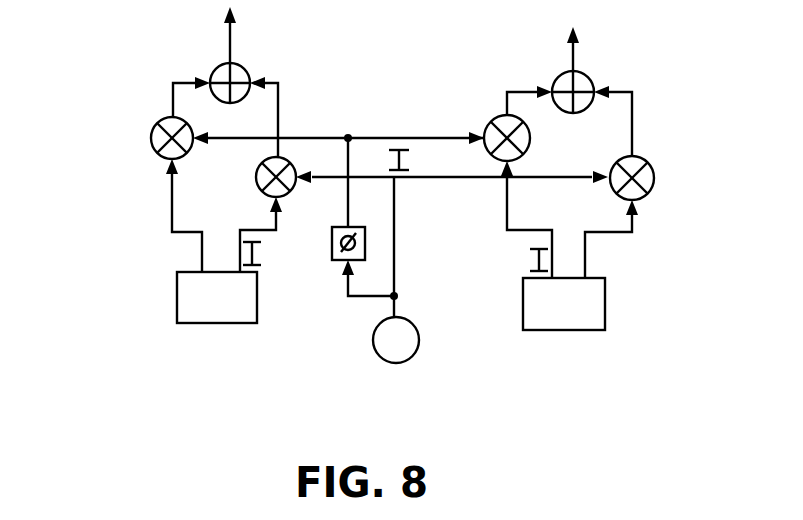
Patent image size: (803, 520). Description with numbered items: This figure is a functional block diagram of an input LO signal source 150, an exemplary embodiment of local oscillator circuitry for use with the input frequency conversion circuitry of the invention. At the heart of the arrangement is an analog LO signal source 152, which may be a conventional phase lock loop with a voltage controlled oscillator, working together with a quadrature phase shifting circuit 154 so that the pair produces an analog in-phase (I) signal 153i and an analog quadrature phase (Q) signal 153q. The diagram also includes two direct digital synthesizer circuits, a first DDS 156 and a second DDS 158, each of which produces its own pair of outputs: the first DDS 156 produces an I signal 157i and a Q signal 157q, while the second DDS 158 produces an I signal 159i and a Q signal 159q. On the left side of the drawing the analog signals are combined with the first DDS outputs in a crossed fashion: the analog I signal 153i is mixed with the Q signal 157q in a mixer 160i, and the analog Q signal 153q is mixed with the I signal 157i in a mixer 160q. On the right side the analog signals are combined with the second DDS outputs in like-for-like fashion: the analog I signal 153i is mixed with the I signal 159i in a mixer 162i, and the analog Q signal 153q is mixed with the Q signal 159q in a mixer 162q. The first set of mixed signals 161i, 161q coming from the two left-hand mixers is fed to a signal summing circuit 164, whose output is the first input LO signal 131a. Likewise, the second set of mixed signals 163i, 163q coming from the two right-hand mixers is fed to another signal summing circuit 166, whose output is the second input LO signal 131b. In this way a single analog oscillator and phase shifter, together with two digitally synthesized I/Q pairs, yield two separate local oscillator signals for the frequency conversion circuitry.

The input LO signal source 150 is at (114, 410).
The analog LO signal source 152 is at (393, 363).
The in-phase (I) signal 153i is at (400, 268).
The quadrature phase (Q) signal 153q is at (347, 196).
The quadrature phase shifting circuit 154 is at (331, 250).
The first direct digital synthesizer (DDS) circuit 156 is at (217, 323).
The I signal of first DDS 157i is at (260, 232).
The Q signal of first DDS 157q is at (172, 220).
The second direct digital synthesizer (DDS) circuit 158 is at (567, 330).
The I signal of second DDS 159i is at (502, 222).
The Q signal of second DDS 159q is at (633, 233).
The mixer 160i is at (256, 174).
The mixer 160q is at (151, 142).
The first mixed signal (I) 161i is at (281, 110).
The first mixed signal (Q) 161q is at (173, 100).
The mixer 162i is at (530, 145).
The mixer 162q is at (651, 164).
The second mixed signal (I) 163i is at (507, 95).
The second mixed signal (Q) 163q is at (633, 110).
The signal summing circuit 164 is at (247, 70).
The signal summing circuit 166 is at (562, 73).
The first input LO signal 131a is at (226, 40).
The second input LO signal 131b is at (576, 50).